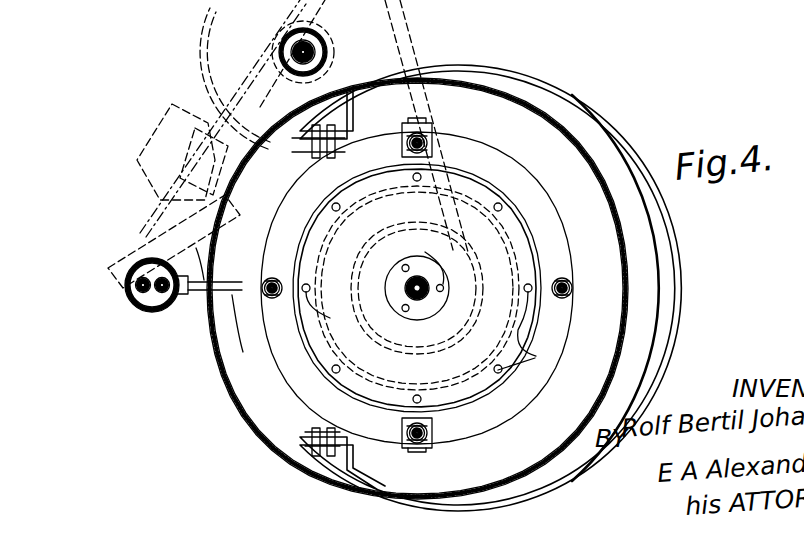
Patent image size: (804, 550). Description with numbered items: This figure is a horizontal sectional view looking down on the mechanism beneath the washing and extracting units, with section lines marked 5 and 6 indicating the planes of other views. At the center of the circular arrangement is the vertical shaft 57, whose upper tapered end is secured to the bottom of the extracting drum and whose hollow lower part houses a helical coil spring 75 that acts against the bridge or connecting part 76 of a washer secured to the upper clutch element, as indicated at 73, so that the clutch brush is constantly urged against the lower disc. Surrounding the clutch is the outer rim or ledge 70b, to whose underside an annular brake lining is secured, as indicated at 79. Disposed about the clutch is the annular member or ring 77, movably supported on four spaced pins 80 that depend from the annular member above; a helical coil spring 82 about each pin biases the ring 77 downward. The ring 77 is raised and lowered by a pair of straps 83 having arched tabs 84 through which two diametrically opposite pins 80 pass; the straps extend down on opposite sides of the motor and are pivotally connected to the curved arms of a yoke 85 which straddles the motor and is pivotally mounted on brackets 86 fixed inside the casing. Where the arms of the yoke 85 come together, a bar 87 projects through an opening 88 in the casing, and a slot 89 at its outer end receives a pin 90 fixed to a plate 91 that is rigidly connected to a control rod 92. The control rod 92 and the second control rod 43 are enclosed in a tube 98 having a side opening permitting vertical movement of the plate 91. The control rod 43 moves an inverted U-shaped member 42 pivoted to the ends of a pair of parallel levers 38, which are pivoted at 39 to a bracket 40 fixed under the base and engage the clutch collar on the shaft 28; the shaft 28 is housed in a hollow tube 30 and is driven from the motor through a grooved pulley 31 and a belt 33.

The section line 5- 5 is at (173, 133).
The section line 6- 6 is at (107, 425).
The shaft 28 is at (298, 56).
The hollow tube 30 is at (320, 50).
The grooved pulley 31 is at (392, 230).
The belt 33 is at (478, 201).
The levers 38 is at (160, 185).
The pivot 39 is at (176, 152).
The bracket 40 is at (208, 198).
The inverted U-shaped member 42 is at (132, 252).
The control rod 43 is at (133, 290).
The vertical shaft 57 is at (430, 290).
The outer rim or ledge 70b is at (533, 212).
The securing of washer 73 is at (405, 264).
The helical coil spring 75 is at (406, 293).
The bridge or connecting part 76 is at (417, 301).
The annular member or ring 77 is at (558, 246).
The securing of brake lining 79 is at (353, 327).
The pins 80 is at (406, 141).
The helical coil spring 82 is at (432, 147).
The straps 83 is at (430, 130).
The arched or curved tabs 84 is at (434, 155).
The yoke 85 is at (267, 190).
The brackets 86 is at (357, 92).
The bar 87 is at (212, 342).
The opening 88 is at (244, 7).
The slot 89 is at (352, 7).
The pin 90 is at (186, 318).
The plate 91 is at (195, 250).
The control rod 92 is at (160, 293).
The tube 98 is at (141, 293).